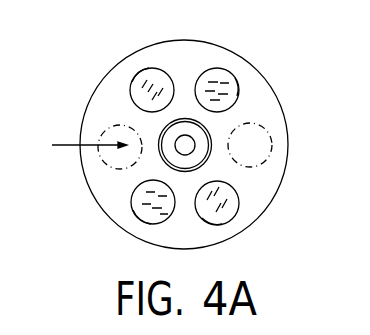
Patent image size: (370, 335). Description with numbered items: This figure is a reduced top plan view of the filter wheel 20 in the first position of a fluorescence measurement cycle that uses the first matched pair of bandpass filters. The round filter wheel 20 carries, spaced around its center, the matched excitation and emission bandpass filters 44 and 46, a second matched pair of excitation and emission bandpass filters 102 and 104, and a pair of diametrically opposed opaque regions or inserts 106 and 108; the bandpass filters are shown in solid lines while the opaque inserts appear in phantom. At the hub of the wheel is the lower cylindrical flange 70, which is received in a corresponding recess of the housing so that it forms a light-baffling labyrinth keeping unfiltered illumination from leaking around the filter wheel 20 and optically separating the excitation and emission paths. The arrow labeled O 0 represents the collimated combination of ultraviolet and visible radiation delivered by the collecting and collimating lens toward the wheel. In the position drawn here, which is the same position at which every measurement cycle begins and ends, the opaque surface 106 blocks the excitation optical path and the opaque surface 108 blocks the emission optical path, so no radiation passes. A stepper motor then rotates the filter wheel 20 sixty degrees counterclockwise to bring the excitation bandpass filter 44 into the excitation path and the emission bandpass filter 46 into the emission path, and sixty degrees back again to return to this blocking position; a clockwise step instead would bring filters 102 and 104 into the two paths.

The arrow O 0 is at (66, 145).
The filter wheel 20 is at (279, 197).
The excitation bandpass filter 44 is at (138, 76).
The emission bandpass filter 46 is at (229, 208).
The lower cylindrical flange 70 is at (206, 133).
The excitation bandpass filter 102 is at (143, 212).
The emission bandpass filter 104 is at (223, 82).
The opaque region 106 is at (100, 158).
The opaque region 108 is at (272, 152).